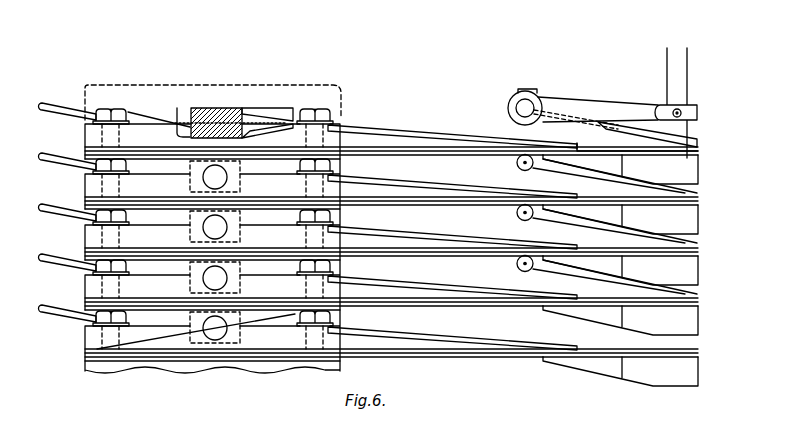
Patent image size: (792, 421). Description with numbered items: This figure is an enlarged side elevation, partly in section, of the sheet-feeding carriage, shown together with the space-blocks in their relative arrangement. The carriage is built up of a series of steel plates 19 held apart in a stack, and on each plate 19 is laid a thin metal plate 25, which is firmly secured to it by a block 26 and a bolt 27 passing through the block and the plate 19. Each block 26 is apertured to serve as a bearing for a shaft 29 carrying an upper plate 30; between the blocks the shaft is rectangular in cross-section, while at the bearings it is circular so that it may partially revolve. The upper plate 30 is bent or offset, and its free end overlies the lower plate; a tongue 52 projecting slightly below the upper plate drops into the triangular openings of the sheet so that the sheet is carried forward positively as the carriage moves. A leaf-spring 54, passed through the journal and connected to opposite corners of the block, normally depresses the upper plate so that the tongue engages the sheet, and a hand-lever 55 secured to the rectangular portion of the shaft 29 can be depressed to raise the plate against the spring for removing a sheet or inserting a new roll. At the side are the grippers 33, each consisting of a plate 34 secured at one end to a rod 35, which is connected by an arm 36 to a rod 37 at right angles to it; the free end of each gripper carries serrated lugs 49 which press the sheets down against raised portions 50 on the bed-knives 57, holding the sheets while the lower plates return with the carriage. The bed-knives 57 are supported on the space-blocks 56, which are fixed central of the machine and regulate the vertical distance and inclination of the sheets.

The plate 19 is at (86, 153).
The thin metal plate 25 is at (480, 150).
The block 26 is at (212, 240).
The bolt 27 is at (113, 104).
The shaft 29 is at (215, 252).
The upper plate 30 is at (226, 122).
The gripper 33 is at (620, 208).
The plate 34 is at (609, 231).
The rod 35 is at (530, 106).
The arm 36 is at (600, 104).
The rod 37 is at (675, 89).
The lug 49 is at (697, 146).
The raised portion 50 is at (699, 153).
The tongue 52 is at (571, 153).
The leaf-spring 54 is at (196, 331).
The hand-lever 55 is at (70, 104).
The space-block 56 is at (637, 228).
The bed-knife 57 is at (687, 173).